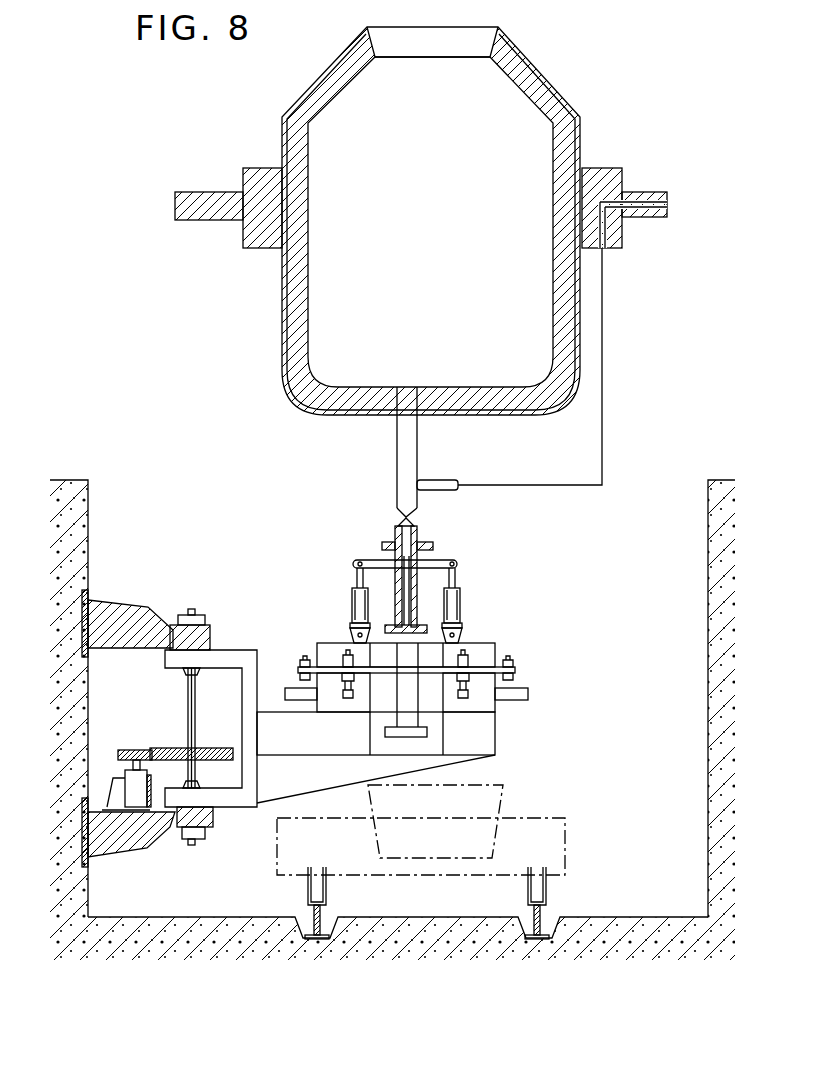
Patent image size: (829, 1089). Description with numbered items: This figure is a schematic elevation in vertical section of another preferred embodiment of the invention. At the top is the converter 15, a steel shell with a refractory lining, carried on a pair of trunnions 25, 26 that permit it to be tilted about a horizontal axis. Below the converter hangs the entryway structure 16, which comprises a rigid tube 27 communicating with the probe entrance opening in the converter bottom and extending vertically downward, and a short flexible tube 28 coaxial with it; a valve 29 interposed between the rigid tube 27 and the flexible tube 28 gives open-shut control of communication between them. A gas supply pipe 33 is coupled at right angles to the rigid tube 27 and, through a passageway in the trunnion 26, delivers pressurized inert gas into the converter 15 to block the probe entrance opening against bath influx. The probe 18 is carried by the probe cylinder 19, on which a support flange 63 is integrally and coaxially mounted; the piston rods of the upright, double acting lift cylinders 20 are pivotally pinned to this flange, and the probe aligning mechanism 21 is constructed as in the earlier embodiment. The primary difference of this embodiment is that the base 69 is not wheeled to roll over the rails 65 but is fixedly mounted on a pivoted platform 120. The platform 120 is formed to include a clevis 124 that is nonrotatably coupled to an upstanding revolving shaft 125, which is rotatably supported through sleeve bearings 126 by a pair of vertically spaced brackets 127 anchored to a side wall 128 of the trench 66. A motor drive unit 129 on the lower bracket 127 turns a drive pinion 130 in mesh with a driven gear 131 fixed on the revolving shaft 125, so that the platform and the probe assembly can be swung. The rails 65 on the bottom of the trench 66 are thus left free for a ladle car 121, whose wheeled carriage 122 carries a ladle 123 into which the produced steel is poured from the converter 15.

The converter 15 is at (552, 72).
The trunnion 25 is at (252, 168).
The trunnion 26 is at (612, 168).
The rigid tube 27 is at (397, 443).
The gas supply pipe 33 is at (438, 482).
The entryway structure 16 is at (390, 500).
The valve 29 is at (413, 518).
The flexible tube 28 is at (417, 537).
The probe 18 is at (404, 575).
The support flange 63 is at (372, 563).
The lift cylinders 20 is at (358, 605).
The probe aligning mechanism 21 is at (517, 670).
The probe cylinder 19 is at (397, 720).
The pivoted platform 120 is at (268, 720).
The base 69 is at (480, 700).
The clevis 124 is at (220, 655).
The revolving shaft 125 is at (188, 692).
The driven gear 131 is at (212, 748).
The drive pinion 130 is at (133, 750).
The motor drive unit 129 is at (135, 790).
The sleeve bearings 126 is at (180, 615).
The brackets 127 is at (122, 605).
The side wall 128 is at (90, 512).
The trench 66 is at (676, 498).
The rails 65 is at (316, 920).
The ladle car 121 is at (572, 840).
The wheeled carriage 122 is at (560, 820).
The ladle 123 is at (503, 790).